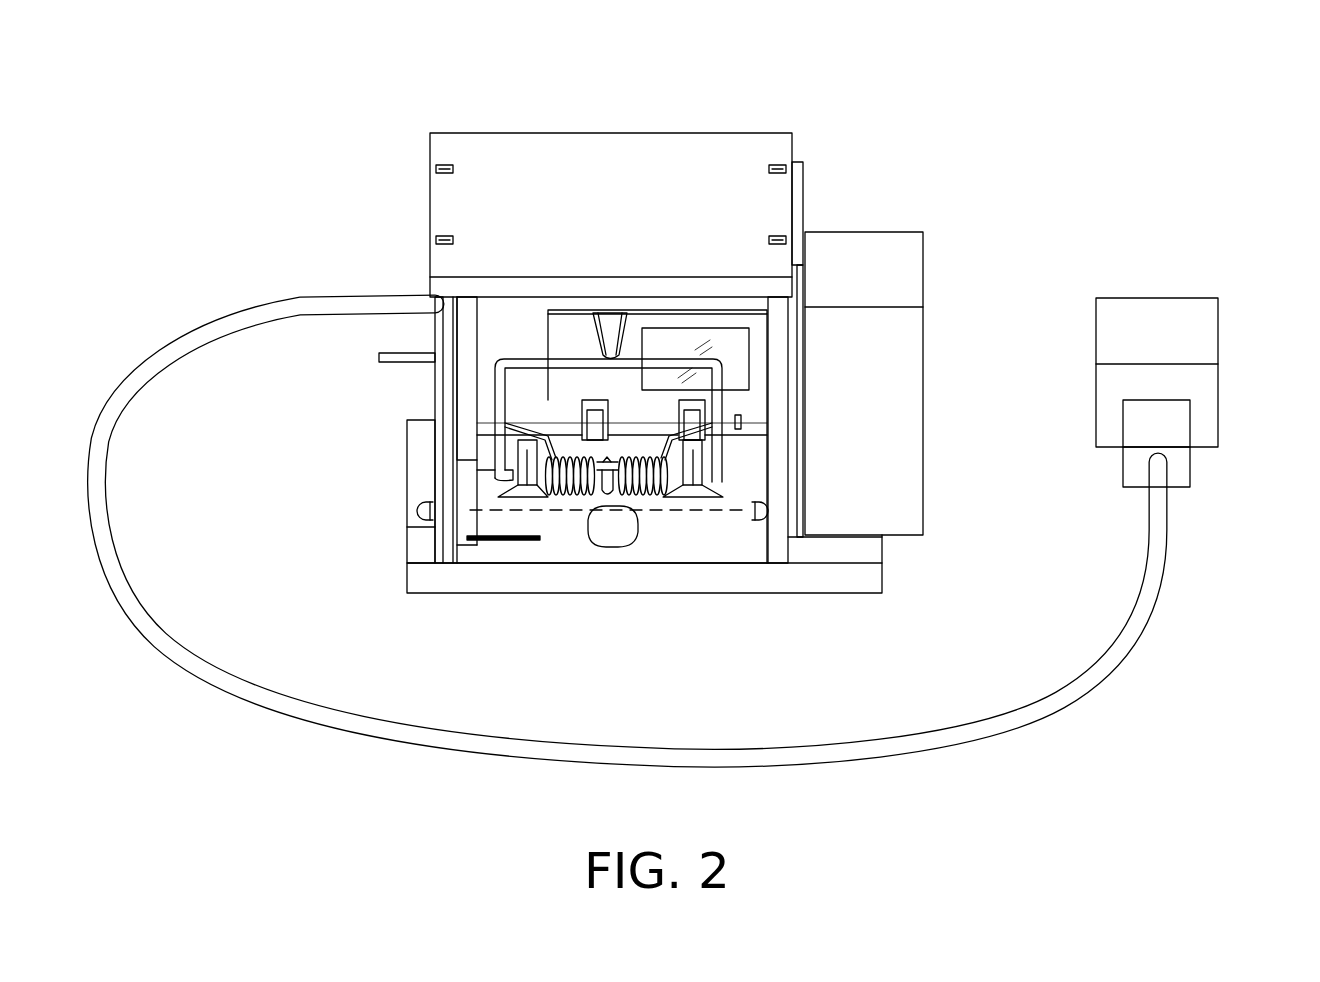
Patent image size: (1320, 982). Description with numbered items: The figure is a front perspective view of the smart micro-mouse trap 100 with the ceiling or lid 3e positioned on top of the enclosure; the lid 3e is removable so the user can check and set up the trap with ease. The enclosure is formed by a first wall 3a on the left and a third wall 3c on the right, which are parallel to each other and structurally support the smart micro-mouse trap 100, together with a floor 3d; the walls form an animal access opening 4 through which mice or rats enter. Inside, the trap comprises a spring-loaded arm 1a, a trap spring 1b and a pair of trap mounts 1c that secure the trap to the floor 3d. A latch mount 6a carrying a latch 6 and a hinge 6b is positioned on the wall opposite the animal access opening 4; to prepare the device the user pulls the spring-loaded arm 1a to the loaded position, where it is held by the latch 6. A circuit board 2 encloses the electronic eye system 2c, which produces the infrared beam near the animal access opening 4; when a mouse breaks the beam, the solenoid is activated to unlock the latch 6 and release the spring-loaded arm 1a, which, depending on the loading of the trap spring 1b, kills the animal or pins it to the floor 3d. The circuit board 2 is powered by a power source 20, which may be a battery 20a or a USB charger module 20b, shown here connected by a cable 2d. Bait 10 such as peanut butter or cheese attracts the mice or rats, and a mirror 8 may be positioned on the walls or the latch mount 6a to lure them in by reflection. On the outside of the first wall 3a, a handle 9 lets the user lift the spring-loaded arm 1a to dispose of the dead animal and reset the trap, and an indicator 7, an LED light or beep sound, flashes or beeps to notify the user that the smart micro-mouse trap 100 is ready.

The smart micro-mouse trap 100 is at (320, 72).
The ceiling or lid 3e is at (617, 160).
The circuit board 2 is at (868, 258).
The electronic eye system 2c is at (754, 510).
The cable 2d is at (627, 531).
The power source 20 is at (1204, 349).
The battery 20a is at (1158, 320).
The USB charger module 20b is at (1163, 423).
The spring-loaded arm 1a is at (518, 360).
The trap spring 1b is at (570, 495).
The trap mount 1c is at (527, 482).
The latch 6 is at (610, 330).
The latch mount 6a is at (704, 318).
The hinge 6b is at (597, 410).
The mirror 8 is at (735, 340).
The handle 9 is at (405, 355).
The first wall 3a is at (440, 441).
The third wall 3c is at (780, 474).
The floor 3d is at (525, 580).
The indicator 7 is at (416, 510).
The bait 10 is at (620, 535).
The animal access opening 4 is at (697, 628).